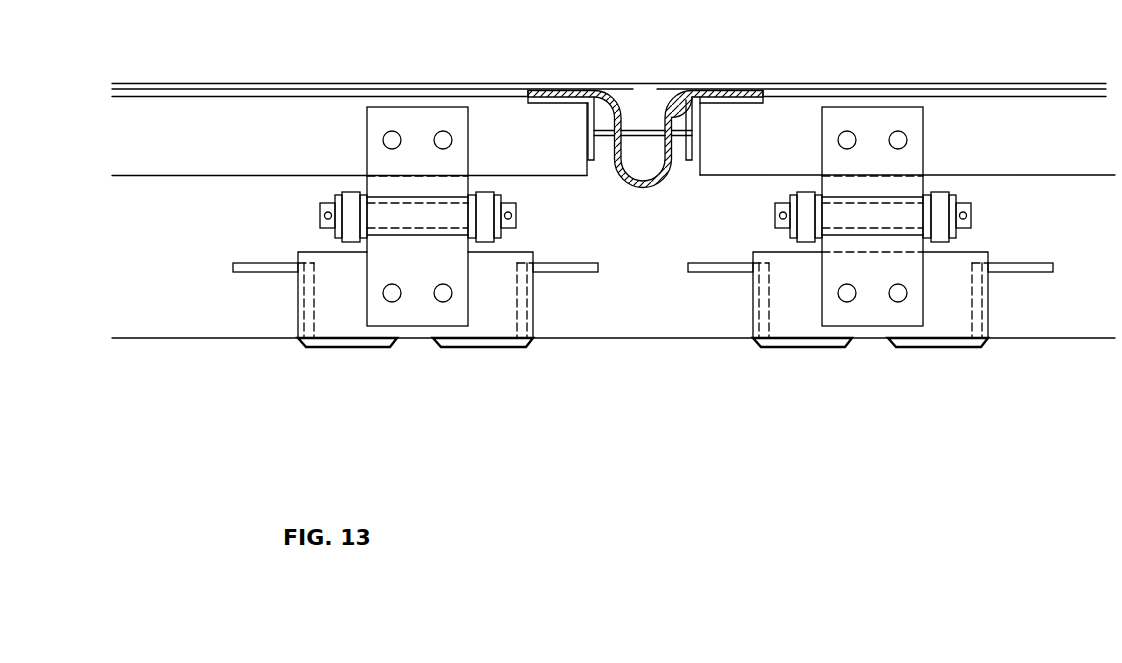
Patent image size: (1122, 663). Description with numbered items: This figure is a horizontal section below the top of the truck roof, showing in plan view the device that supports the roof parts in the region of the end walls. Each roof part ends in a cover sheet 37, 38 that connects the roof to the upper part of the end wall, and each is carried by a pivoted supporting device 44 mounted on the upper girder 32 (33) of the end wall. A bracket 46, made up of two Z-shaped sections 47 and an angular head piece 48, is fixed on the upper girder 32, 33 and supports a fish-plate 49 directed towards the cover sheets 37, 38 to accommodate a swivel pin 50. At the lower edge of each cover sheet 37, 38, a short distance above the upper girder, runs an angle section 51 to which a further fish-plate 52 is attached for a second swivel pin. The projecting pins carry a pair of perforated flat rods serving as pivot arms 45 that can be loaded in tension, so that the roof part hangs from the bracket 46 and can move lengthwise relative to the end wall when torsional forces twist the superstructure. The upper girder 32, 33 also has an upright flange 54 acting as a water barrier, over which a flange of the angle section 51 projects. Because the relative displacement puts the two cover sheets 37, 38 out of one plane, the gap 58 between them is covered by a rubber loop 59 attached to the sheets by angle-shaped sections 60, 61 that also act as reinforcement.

The upper girder of the end wall 32 is at (607, 313).
The upper girder of the end wall 33 is at (592, 435).
The cover sheet 37 is at (962, 83).
The cover sheet 38 is at (385, 88).
The pivoted supporting device 44 is at (440, 372).
The pivot arms 45 is at (803, 203).
The bracket 46 is at (917, 368).
The Z-shaped sections 47 is at (763, 304).
The angular head piece 48 is at (957, 270).
The fish-plate 49 is at (838, 272).
The swivel pin 50 is at (883, 217).
The angle section 51 is at (238, 148).
The fish-plate 52 is at (912, 132).
The upright flange 54 is at (603, 138).
The gap 58 is at (650, 76).
The rubber loop 59 is at (647, 189).
The angle-shaped section 60 is at (740, 100).
The angle-shaped section 61 is at (545, 102).